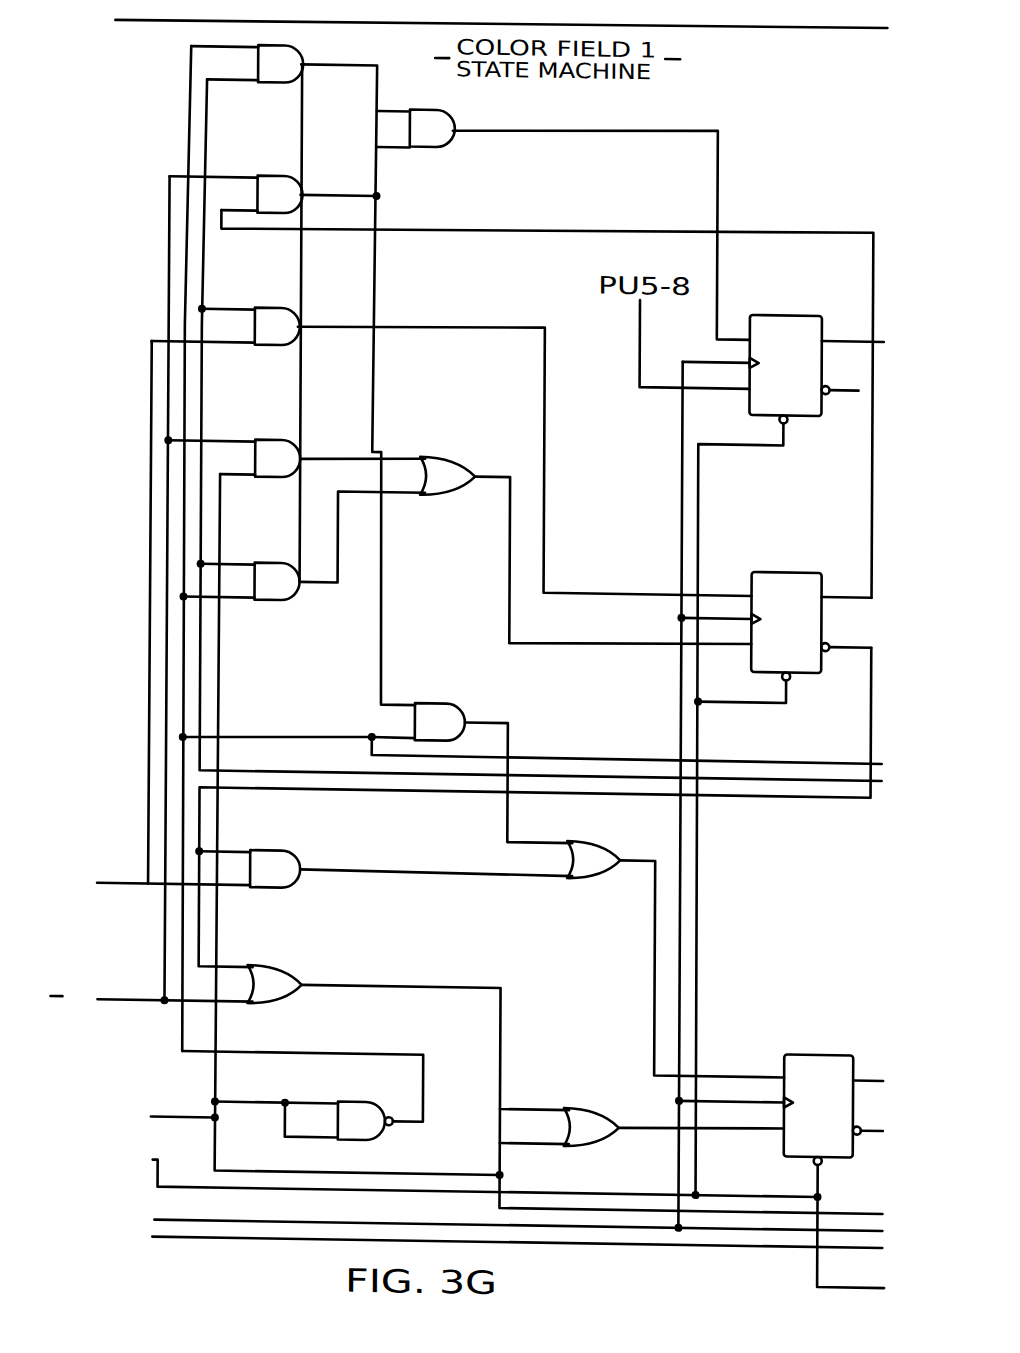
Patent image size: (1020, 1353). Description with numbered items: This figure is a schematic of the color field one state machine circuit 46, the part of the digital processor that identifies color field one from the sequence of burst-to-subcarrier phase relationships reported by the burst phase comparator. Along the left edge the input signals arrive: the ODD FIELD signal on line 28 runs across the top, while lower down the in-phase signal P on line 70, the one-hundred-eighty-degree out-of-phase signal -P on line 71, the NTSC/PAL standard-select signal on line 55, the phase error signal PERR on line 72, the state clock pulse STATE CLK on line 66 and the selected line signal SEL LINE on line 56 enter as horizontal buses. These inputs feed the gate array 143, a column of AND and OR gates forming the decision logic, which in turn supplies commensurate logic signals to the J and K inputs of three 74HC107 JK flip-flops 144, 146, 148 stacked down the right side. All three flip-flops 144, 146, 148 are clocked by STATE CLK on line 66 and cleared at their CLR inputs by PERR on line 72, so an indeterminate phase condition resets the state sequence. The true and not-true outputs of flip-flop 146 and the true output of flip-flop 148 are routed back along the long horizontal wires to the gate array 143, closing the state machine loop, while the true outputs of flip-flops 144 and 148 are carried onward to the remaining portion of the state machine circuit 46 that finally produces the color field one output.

The ODD FIELD line 28 is at (142, 27).
The state machine circuit 46 is at (662, 116).
The gate array 143 is at (136, 505).
The JK flip-flop 144 is at (809, 407).
The JK flip-flop 146 is at (809, 660).
The JK flip-flop 148 is at (790, 1143).
The P line 70 is at (115, 887).
The -P line 71 is at (117, 1005).
The NTSC/PAL line 55 is at (174, 1120).
The PERR line 72 is at (174, 1190).
The STATE CLK line 66 is at (195, 1227).
The SEL LINE line 56 is at (182, 1243).